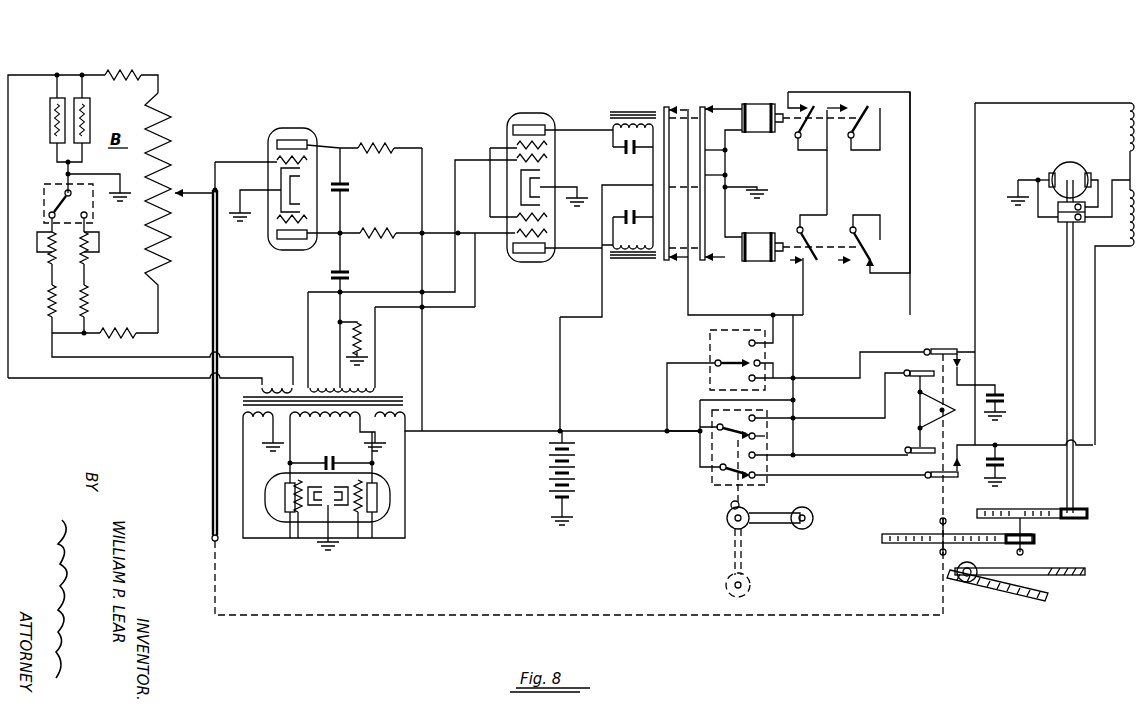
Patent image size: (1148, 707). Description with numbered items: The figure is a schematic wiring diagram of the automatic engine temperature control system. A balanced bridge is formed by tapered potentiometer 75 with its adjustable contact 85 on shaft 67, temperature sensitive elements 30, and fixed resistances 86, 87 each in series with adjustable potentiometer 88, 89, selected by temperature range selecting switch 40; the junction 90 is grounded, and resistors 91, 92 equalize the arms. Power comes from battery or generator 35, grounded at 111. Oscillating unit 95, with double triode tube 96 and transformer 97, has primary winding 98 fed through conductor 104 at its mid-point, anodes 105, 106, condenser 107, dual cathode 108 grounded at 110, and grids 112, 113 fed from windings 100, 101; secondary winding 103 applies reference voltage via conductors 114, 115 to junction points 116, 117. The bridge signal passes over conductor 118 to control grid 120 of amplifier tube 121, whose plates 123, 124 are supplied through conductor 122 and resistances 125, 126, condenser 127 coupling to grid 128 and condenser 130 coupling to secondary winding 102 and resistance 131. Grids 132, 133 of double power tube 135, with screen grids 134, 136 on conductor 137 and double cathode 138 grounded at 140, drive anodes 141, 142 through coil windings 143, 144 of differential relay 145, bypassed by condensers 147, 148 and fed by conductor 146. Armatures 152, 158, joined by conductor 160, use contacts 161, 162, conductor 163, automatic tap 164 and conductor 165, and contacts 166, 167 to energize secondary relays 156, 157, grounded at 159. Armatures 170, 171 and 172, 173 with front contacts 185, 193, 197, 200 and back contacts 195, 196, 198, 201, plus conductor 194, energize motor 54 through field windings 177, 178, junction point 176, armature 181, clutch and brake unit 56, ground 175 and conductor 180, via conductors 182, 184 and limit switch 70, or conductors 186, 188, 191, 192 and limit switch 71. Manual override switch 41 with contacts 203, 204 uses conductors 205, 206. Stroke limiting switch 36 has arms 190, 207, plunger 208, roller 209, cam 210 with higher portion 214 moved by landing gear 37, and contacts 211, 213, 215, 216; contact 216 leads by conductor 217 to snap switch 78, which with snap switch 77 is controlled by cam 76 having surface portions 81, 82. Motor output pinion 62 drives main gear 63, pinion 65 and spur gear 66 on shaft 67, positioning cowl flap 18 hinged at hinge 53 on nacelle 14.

The engine nacelle 14 is at (1076, 578).
The cowl flap 18 is at (1010, 600).
The temperature sensitive elements 30 is at (50, 128).
The battery or generator 35 is at (576, 470).
The stroke limiting switch 36 is at (782, 472).
The retractable landing gear 37 is at (798, 528).
The temperature range selecting switch 40 is at (50, 205).
The manual override switch 41 is at (718, 356).
The hinge 53 is at (970, 582).
The motor 54 is at (1073, 173).
The clutch and brake unit 56 is at (1066, 226).
The output pinion 62 is at (1086, 518).
The main gear 63 is at (1050, 500).
The pinion 65 is at (1036, 542).
The spur gear 66 is at (922, 544).
The shaft 67 is at (218, 284).
The final limit switch 70 is at (930, 352).
The final limit switch 71 is at (930, 478).
The tapered potentiometer 75 is at (170, 138).
The cam 76 is at (908, 418).
The snap switch 77 is at (915, 440).
The snap switch 78 is at (913, 384).
The discontinuous surface portion 81 is at (946, 418).
The discontinuous surface portion 82 is at (950, 390).
The adjustable contact 85 is at (180, 190).
The fixed resistance 86 is at (50, 294).
The fixed resistance 87 is at (90, 294).
The adjustable potentiometer 88 is at (50, 265).
The adjustable potentiometer 89 is at (90, 264).
The junction 90 is at (62, 174).
The resistor 91 is at (127, 74).
The resistor 92 is at (124, 333).
The oscillating unit 95 is at (354, 492).
The double triode electronic tube 96 is at (374, 536).
The multiple winding transformer 97 is at (404, 376).
The primary winding 98 is at (300, 432).
The winding 100 is at (243, 435).
The winding 101 is at (408, 418).
The secondary winding 102 is at (374, 386).
The secondary winding 103 is at (268, 382).
The conductor 104 is at (518, 428).
The anode 105 is at (274, 542).
The anode 106 is at (380, 508).
The condenser 107 is at (344, 454).
The dual cathode 108 is at (328, 490).
The ground 110 is at (326, 546).
The ground 111 is at (559, 510).
The grid 112 is at (295, 522).
The grid 113 is at (358, 522).
The conductor 114 is at (80, 380).
The conductor 115 is at (157, 362).
The junction point 116 is at (57, 75).
The junction point 117 is at (52, 356).
The conductor 118 is at (236, 162).
The control grid 120 is at (310, 158).
The double triode amplifier tube 121 is at (300, 128).
The conductor 122 is at (424, 382).
The plate 123 is at (282, 130).
The plate 124 is at (294, 242).
The voltage limiting resistance 125 is at (398, 146).
The voltage limiting resistance 126 is at (384, 230).
The condenser 127 is at (350, 184).
The grid 128 is at (276, 233).
The condenser 130 is at (350, 272).
The resistance 131 is at (358, 322).
The control grid 132 is at (548, 149).
The control grid 133 is at (548, 220).
The screen grid 134 is at (554, 124).
The double power tube 135 is at (529, 118).
The screen grid 136 is at (556, 254).
The conductor 137 is at (451, 233).
The double cathode 138 is at (544, 170).
The ground 140 is at (577, 196).
The anode 141 is at (514, 116).
The anode 142 is at (516, 254).
The coil winding 143 is at (636, 112).
The coil winding 144 is at (629, 266).
The differential relay 145 is at (627, 208).
The conductor 146 is at (562, 362).
The condenser 147 is at (618, 153).
The condenser 148 is at (630, 217).
The armature 152 is at (666, 104).
The secondary relay 156 is at (762, 104).
The secondary relay 157 is at (752, 262).
The armature 158 is at (732, 153).
The ground 159 is at (757, 188).
The conductor 160 is at (728, 172).
The contact 161 is at (702, 106).
The contact 162 is at (676, 260).
The conductor 163 is at (718, 308).
The automatic tap 164 is at (776, 369).
The conductor 165 is at (667, 390).
The contact 166 is at (714, 106).
The contact 167 is at (716, 266).
The armature 170 is at (808, 138).
The armature 171 is at (867, 138).
The armature 172 is at (798, 224).
The armature 173 is at (854, 226).
The ground 175 is at (1018, 196).
The junction point 176 is at (1128, 180).
The field winding 177 is at (1130, 118).
The field winding 178 is at (1128, 238).
The conductor 180 is at (1038, 219).
The armature 181 is at (1056, 172).
The conductor 182 is at (975, 132).
The conductor 184 is at (910, 244).
The front contact 185 is at (788, 98).
The conductor 186 is at (1095, 300).
The conductor 188 is at (850, 478).
The switch arm 190 is at (720, 477).
The conductor 191 is at (700, 402).
The conductor 192 is at (793, 358).
The front contact 193 is at (790, 262).
The conductor 194 is at (827, 189).
The back contact 195 is at (830, 106).
The back contact 196 is at (816, 286).
The front contact 197 is at (866, 104).
The back contact 198 is at (876, 264).
The front contact 200 is at (842, 264).
The back contact 201 is at (874, 102).
The contact 203 is at (737, 358).
The contact 204 is at (756, 381).
The conductor 205 is at (794, 320).
The conductor 206 is at (866, 352).
The contact arm 207 is at (718, 430).
The plunger 208 is at (740, 490).
The roller 209 is at (763, 514).
The cam 210 is at (730, 530).
The contact 211 is at (796, 478).
The contact 213 is at (774, 428).
The higher portion 214 is at (728, 506).
The contact 215 is at (828, 448).
The contact 216 is at (775, 410).
The conductor 217 is at (850, 406).